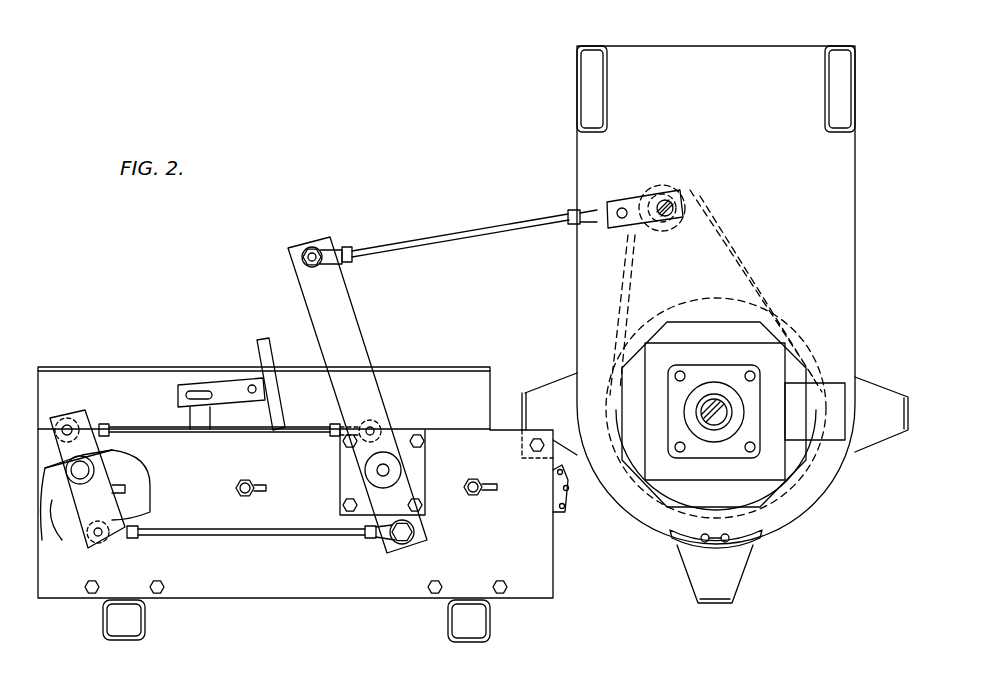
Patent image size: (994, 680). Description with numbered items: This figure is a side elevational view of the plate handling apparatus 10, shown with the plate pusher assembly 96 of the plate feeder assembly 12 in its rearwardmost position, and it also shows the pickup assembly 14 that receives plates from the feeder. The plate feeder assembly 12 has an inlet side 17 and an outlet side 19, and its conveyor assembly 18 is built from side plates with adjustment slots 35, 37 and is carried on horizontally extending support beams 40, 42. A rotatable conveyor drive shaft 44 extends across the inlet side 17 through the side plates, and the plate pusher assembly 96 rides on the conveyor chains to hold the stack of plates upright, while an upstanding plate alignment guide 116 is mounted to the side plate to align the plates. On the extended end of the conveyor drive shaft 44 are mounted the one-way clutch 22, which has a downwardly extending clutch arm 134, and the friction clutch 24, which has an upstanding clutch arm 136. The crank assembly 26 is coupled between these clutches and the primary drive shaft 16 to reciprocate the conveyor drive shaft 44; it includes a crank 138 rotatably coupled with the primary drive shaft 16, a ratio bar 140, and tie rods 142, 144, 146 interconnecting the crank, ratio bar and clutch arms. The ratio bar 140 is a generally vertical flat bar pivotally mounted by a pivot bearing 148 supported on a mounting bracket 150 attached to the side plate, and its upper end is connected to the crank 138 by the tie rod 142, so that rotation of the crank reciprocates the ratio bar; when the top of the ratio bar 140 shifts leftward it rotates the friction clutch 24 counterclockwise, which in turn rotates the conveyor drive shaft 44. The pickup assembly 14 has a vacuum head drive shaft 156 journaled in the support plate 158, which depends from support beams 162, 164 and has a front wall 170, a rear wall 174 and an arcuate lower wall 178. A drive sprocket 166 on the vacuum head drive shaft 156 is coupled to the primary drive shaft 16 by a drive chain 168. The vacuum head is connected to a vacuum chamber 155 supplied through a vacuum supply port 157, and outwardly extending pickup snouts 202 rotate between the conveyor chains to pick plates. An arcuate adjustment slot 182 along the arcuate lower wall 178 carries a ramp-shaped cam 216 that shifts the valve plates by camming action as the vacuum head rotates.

The plate handling apparatus 10 is at (372, 140).
The plate feeder assembly 12 is at (192, 318).
The pickup assembly 14 is at (560, 158).
The primary drive shaft 16 is at (680, 207).
The inlet side 17 is at (65, 395).
The conveyor assembly 18 is at (200, 603).
The outlet side 19 is at (510, 395).
The one-way clutch 22 is at (88, 465).
The friction clutch 24 is at (55, 510).
The crank assembly 26 is at (390, 565).
The adjustment slot 35 is at (262, 488).
The adjustment slot 37 is at (490, 490).
The support beam 40 is at (103, 622).
The support beam 42 is at (490, 620).
The conveyor drive shaft 44 is at (110, 478).
The plate pusher assembly 96 is at (257, 338).
The plate alignment guide 116 is at (148, 382).
The clutch arm 134 is at (108, 538).
The clutch arm 136 is at (75, 418).
The crank 138 is at (635, 200).
The ratio bar 140 is at (345, 318).
The tie rod 142 is at (425, 240).
The tie rod 144 is at (232, 533).
The tie rod 146 is at (232, 430).
The pivot bearing 148 is at (392, 470).
The mounting bracket 150 is at (400, 432).
The vacuum chamber 155 is at (765, 478).
The vacuum head drive shaft 156 is at (722, 400).
The vacuum supply port 157 is at (838, 420).
The support plate 158 is at (732, 103).
The support beam 162 is at (577, 68).
The support beam 164 is at (838, 48).
The drive sprocket 166 is at (718, 315).
The drive chain 168 is at (722, 235).
The front wall 170 is at (577, 250).
The rear wall 174 is at (857, 208).
The arcuate lower wall 178 is at (790, 530).
The adjustment slot 182 is at (670, 538).
The pickup snout 202 is at (530, 392).
The ramp-shaped cam 216 is at (716, 542).